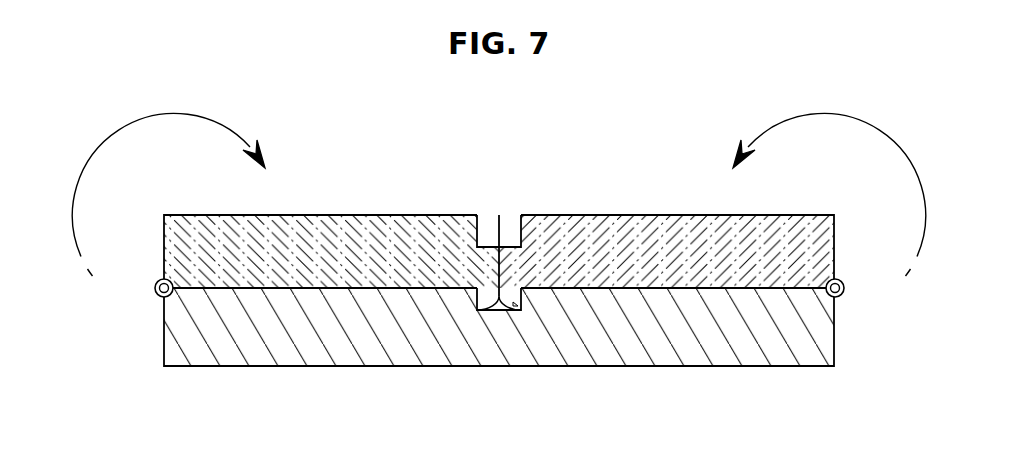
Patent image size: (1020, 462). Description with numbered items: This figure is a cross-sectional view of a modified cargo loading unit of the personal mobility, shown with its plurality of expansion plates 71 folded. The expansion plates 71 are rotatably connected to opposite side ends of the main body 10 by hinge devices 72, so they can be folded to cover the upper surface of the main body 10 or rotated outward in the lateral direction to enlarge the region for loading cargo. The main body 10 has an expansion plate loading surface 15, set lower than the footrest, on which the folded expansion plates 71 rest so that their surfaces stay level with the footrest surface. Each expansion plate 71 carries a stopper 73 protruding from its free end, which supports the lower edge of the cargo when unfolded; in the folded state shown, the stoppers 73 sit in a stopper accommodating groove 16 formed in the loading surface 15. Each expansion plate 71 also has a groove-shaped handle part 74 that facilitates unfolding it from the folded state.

The main body 10 is at (310, 355).
The expansion plate loading surface 15 is at (368, 275).
The stopper accommodating groove 16 is at (516, 310).
The expansion plate 71 is at (340, 215).
The hinge device 72 is at (154, 288).
The stopper 73 is at (509, 302).
The handle part 74 is at (483, 215).